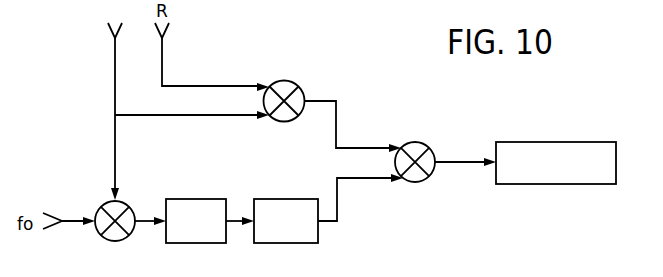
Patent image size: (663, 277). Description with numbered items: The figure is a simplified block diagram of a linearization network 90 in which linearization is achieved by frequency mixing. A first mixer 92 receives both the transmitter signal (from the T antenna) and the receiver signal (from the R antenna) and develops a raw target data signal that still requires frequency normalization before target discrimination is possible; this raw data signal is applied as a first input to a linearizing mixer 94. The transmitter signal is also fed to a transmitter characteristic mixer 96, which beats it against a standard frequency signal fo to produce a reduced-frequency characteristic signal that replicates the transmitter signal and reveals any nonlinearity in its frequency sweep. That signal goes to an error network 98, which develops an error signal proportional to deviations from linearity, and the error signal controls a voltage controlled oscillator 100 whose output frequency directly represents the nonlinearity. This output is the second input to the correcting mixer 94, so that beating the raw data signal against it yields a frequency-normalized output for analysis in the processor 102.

The linearization network 90 is at (91, 143).
The first mixer 92 is at (287, 81).
The linearizing mixer 94 is at (417, 143).
The transmitter characteristic mixer 96 is at (119, 202).
The error network 98 is at (200, 199).
The voltage controlled oscillator 100 is at (280, 199).
The processor 102 is at (572, 148).